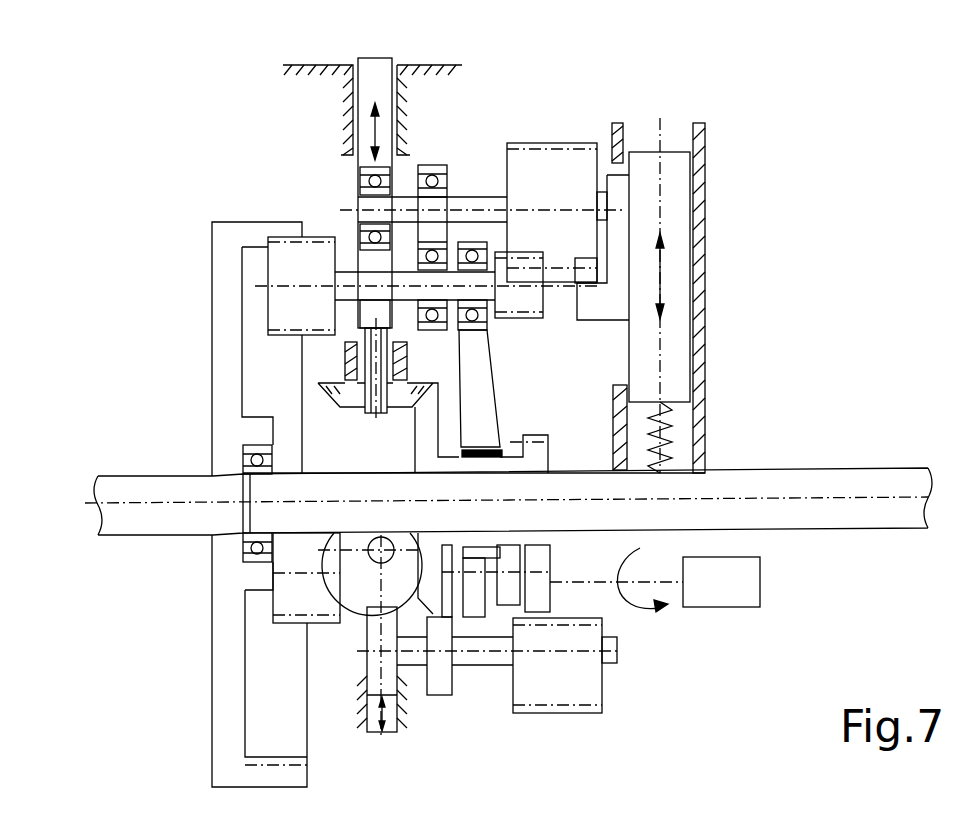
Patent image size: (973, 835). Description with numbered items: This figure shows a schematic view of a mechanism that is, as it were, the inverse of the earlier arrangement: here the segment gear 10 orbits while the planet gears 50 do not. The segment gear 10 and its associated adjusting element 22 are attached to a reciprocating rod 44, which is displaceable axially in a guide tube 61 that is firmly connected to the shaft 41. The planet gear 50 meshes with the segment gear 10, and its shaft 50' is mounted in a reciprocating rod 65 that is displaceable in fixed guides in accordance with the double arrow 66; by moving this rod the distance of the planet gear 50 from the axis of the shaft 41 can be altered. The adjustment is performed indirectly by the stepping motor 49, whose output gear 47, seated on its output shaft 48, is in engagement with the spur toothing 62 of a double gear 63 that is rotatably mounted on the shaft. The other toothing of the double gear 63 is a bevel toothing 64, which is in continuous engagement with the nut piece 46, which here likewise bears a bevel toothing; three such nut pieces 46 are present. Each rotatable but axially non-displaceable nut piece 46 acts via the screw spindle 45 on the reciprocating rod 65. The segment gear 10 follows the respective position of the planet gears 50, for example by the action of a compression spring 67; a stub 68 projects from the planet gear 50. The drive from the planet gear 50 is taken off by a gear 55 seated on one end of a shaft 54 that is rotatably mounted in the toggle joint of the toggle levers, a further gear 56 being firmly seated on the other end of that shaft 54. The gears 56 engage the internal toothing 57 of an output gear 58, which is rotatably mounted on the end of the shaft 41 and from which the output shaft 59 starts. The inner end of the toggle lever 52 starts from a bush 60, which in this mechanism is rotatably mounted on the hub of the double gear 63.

The segment gear 10 is at (580, 277).
The adjusting element 22 is at (598, 302).
The shaft 41 is at (833, 515).
The reciprocating rod 44 is at (675, 173).
The screw spindle 45 is at (373, 405).
The nut piece 46 is at (338, 388).
The output gear 47 is at (550, 600).
The output shaft 48 is at (608, 580).
The stepping motor 49 is at (727, 593).
The planet gear 50 is at (562, 428).
The shaft of the planet gear 50' is at (482, 180).
The toggle lever 52 is at (500, 388).
The shaft 54 is at (407, 290).
The gear 55 is at (515, 300).
The gear 56 is at (305, 257).
The internal toothing 57 is at (285, 757).
The output gear 58 is at (431, 504).
The output shaft 59 is at (142, 490).
The bush 60 is at (507, 442).
The guide tube 61 is at (700, 267).
The spur toothing 62 is at (557, 433).
The double gear 63 is at (423, 440).
The bevel toothing 64 is at (428, 614).
The reciprocating rod 65 is at (373, 70).
The double arrow 66 is at (375, 128).
The compression spring 67 is at (672, 425).
The stub 68 is at (601, 190).